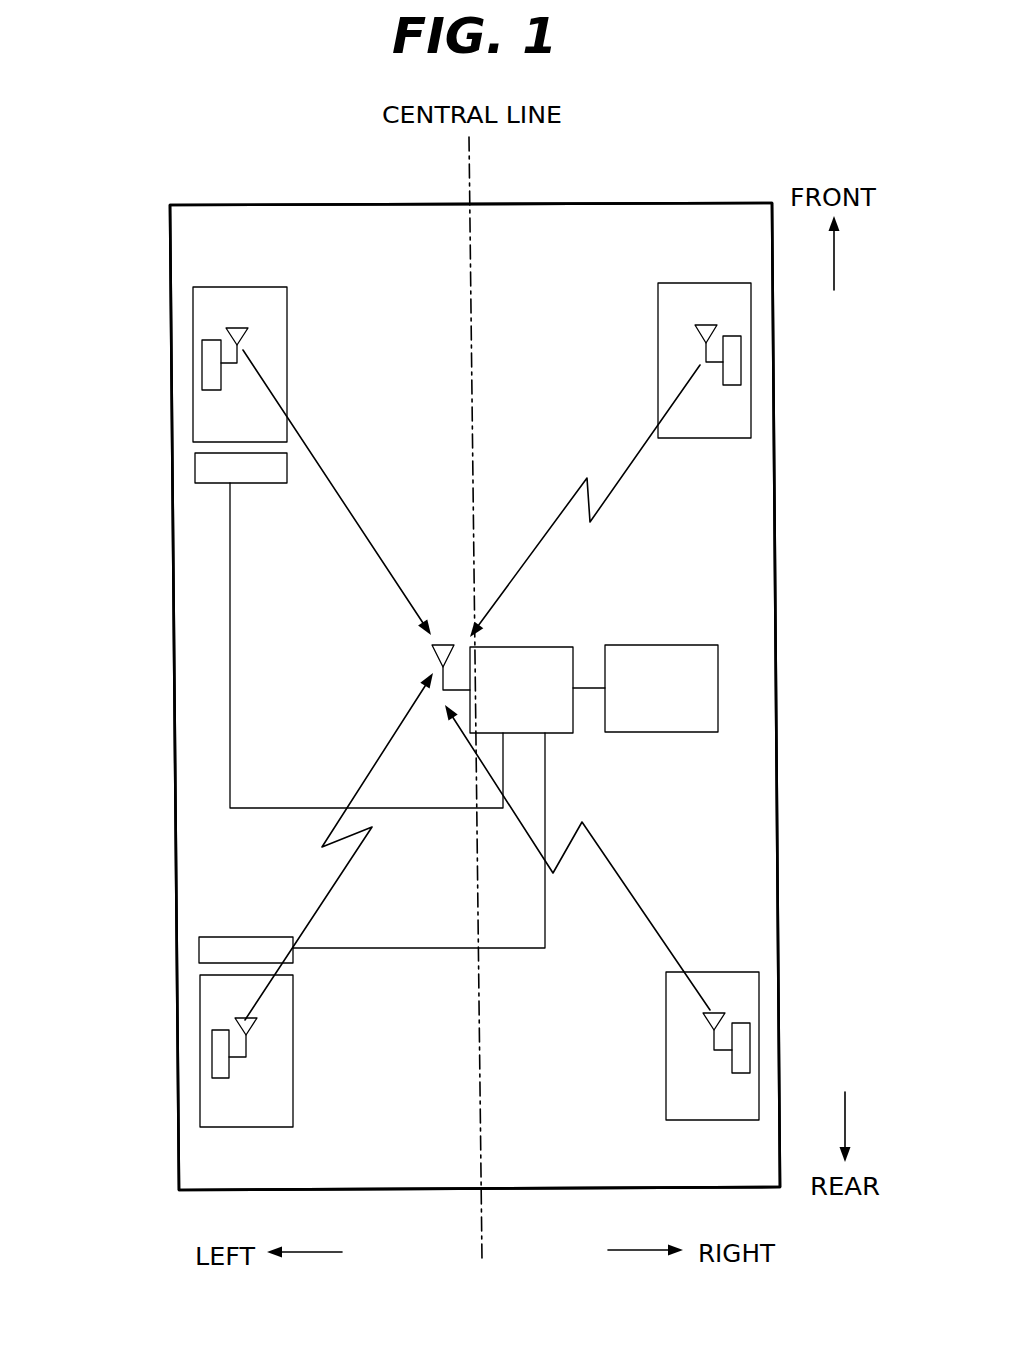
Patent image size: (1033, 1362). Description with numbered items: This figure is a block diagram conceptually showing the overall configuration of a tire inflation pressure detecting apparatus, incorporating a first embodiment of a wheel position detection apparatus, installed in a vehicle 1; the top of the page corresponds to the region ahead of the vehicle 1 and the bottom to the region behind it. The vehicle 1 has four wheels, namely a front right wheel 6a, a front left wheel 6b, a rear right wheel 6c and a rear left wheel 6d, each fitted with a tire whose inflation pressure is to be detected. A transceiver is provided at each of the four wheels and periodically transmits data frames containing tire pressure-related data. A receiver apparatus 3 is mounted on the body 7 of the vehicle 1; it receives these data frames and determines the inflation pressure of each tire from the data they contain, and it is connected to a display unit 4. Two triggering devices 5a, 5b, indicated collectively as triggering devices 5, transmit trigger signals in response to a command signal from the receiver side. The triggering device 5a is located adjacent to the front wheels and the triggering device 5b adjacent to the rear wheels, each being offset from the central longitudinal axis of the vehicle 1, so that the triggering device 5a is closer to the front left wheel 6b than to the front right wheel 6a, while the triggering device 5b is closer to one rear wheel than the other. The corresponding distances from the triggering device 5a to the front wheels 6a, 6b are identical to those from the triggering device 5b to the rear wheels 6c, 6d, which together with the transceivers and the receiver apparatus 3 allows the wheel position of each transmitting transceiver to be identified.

The vehicle 1 is at (661, 201).
The receiver apparatus 3 is at (532, 648).
The display unit 4 is at (688, 645).
The triggering devices 5 is at (88, 565).
The triggering device 5a is at (195, 468).
The triggering device 5b is at (199, 948).
The front right wheel 6a is at (695, 283).
The front left wheel 6b is at (248, 287).
The rear right wheel 6c is at (725, 1120).
The rear left wheel 6d is at (233, 1127).
The body 7 is at (778, 618).